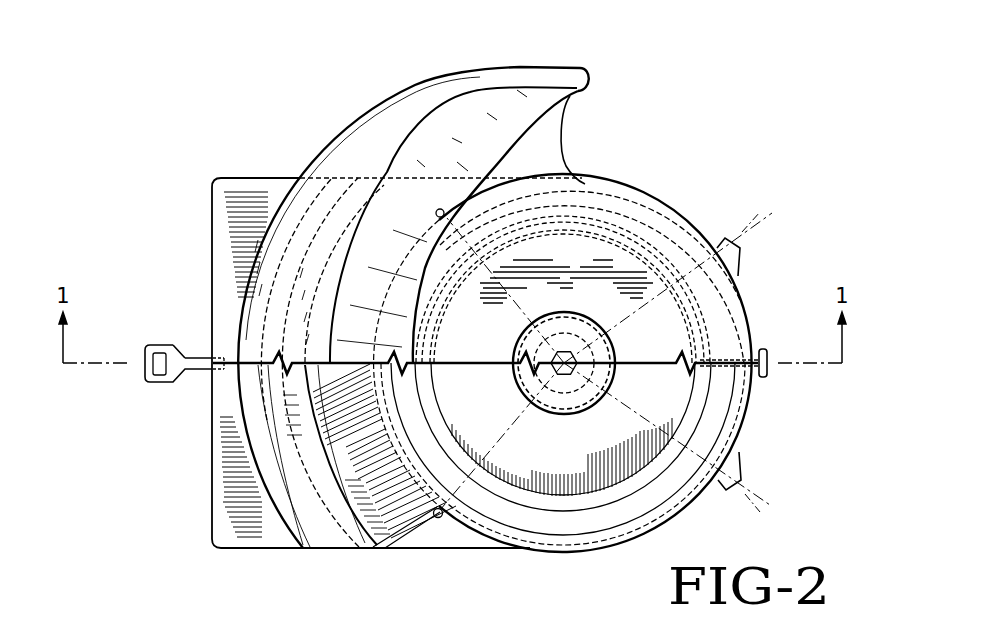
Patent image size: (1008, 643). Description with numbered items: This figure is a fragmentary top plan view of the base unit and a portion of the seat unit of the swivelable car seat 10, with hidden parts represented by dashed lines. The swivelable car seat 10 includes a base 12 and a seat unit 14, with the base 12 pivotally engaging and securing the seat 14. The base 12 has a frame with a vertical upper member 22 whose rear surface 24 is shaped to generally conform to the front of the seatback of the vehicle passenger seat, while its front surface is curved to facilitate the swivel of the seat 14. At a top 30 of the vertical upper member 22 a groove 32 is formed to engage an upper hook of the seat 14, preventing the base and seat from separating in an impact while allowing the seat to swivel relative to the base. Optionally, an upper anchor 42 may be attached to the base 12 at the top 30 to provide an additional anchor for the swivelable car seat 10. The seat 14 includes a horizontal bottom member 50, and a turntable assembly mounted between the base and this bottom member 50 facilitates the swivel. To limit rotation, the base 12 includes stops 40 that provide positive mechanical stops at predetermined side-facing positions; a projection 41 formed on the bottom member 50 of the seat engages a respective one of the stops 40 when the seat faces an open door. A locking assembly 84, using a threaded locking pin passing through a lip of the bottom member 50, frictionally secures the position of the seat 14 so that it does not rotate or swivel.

The swivelable car seat 10 is at (140, 170).
The base 12 is at (254, 181).
The seat unit 14 is at (521, 66).
The vertical upper member 22 is at (227, 250).
The rear surface 24 is at (210, 462).
The top 30 is at (232, 510).
The groove 32 is at (268, 503).
The stops 40 is at (437, 212).
The projection 41 is at (733, 258).
The upper anchor 42 is at (170, 382).
The horizontal bottom member 50 is at (615, 207).
The locking assembly 84 is at (768, 375).